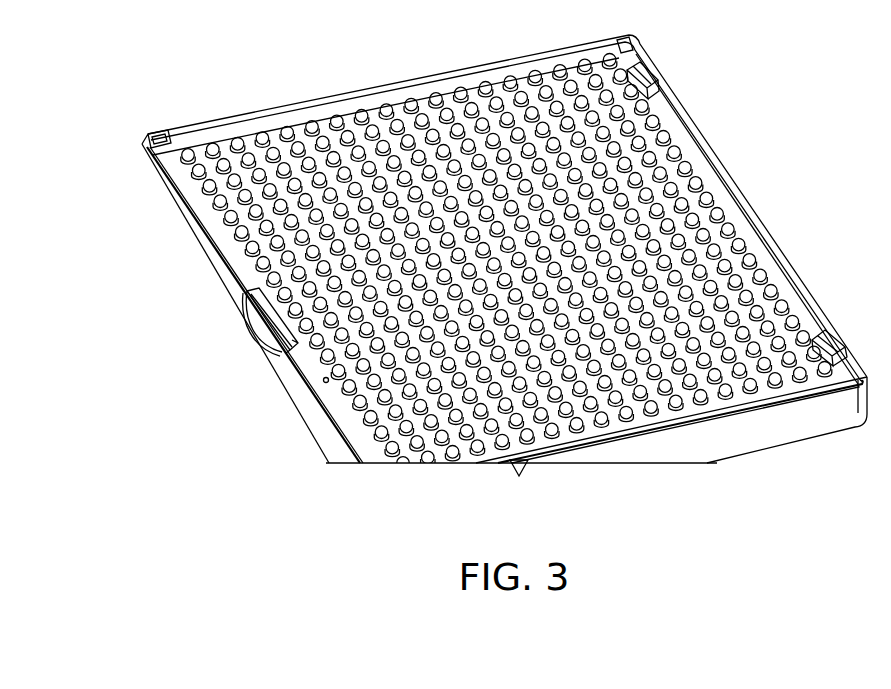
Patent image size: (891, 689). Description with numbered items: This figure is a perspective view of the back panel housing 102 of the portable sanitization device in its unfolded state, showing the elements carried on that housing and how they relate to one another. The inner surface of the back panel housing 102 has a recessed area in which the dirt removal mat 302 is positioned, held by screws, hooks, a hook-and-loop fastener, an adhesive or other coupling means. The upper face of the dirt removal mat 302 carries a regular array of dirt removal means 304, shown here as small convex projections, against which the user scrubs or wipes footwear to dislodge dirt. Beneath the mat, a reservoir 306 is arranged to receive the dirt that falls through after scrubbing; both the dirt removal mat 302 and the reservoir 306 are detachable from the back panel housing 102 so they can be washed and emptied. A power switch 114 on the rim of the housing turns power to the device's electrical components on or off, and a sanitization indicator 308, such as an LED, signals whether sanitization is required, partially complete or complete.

The back panel housing 102 is at (281, 108).
The dirt removal mat 302 is at (230, 247).
The dirt removal means 304 is at (193, 170).
The power switch 114 is at (260, 332).
The sanitization indicator 308 is at (323, 382).
The reservoir 306 is at (630, 450).